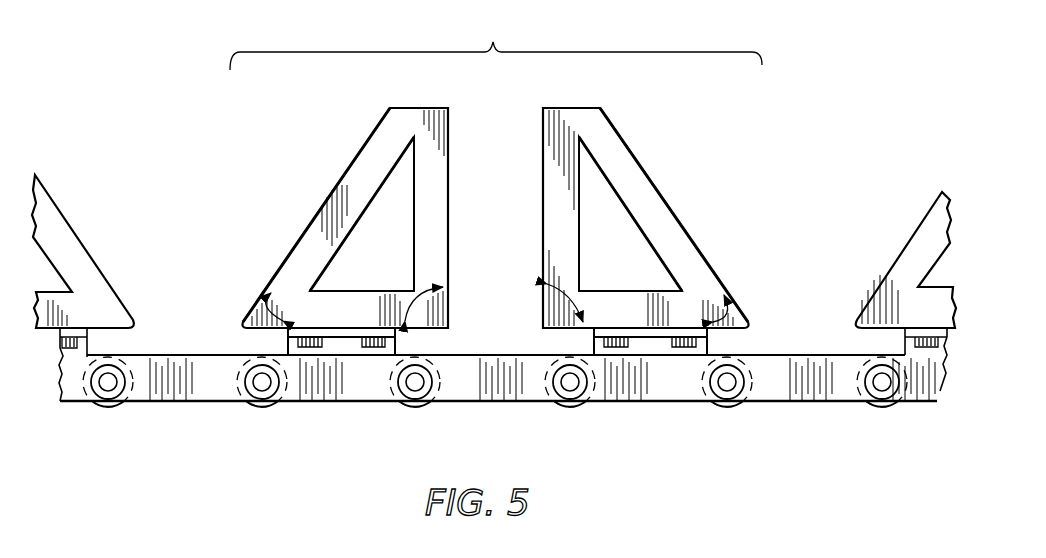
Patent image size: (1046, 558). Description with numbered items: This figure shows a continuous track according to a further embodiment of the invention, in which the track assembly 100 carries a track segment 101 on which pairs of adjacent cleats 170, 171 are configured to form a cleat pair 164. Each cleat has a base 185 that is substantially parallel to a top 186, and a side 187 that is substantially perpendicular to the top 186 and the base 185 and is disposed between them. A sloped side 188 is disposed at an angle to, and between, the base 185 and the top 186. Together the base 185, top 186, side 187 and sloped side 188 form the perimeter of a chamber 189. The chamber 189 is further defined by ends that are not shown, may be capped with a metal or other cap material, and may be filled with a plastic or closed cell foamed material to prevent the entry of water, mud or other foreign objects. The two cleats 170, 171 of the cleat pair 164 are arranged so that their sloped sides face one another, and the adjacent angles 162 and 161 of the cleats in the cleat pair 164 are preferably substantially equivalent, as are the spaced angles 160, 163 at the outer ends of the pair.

The carriage 100 is at (181, 408).
The carriage beam 101 is at (190, 355).
The spaced angle 160 is at (730, 310).
The adjacent angle 161 is at (556, 300).
The adjacent angle 162 is at (424, 298).
The spaced angle 163 is at (262, 305).
The cleat pair 164 is at (496, 41).
The cleat 170 is at (308, 227).
The cleat 171 is at (662, 181).
The base 185 is at (323, 321).
The top 186 is at (400, 108).
The side 187 is at (450, 148).
The sloped side 188 is at (340, 182).
The chamber 189 is at (398, 188).